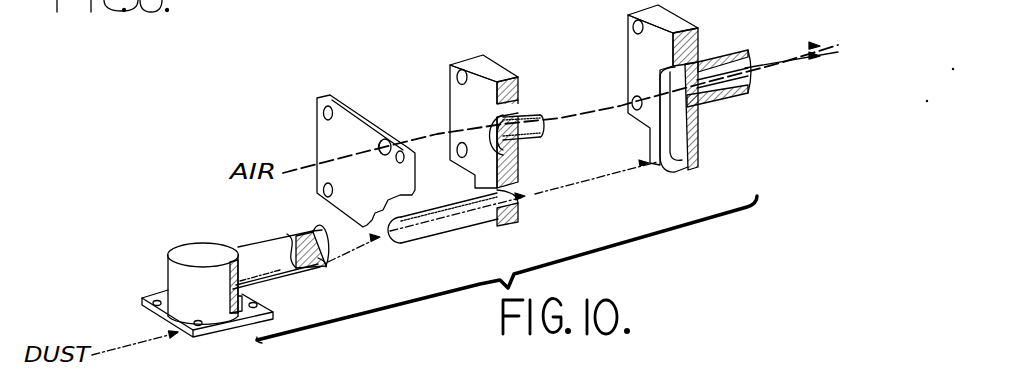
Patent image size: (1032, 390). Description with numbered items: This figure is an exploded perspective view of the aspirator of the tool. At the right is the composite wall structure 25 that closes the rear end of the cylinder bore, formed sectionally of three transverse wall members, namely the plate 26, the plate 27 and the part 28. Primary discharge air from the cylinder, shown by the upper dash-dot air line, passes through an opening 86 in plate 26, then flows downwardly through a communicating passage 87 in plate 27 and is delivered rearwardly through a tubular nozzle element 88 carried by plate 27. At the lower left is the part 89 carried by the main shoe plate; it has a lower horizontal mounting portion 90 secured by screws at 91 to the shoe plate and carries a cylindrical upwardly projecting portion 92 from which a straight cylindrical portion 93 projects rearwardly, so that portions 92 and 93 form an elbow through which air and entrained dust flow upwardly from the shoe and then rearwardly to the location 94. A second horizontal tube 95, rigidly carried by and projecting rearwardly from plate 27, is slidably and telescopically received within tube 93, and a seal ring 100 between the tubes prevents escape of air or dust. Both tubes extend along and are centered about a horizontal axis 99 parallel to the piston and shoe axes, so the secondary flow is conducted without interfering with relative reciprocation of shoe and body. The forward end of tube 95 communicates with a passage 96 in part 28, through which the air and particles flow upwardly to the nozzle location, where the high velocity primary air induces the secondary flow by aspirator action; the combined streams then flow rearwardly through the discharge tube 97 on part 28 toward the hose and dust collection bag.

The wall structure 25 is at (318, 78).
The plate 26 is at (332, 98).
The plate 27 is at (492, 68).
The part 28 is at (678, 27).
The opening 86 is at (386, 140).
The passage 87 is at (513, 113).
The tubular nozzle element 88 is at (527, 142).
The part 89 is at (175, 240).
The lower horizontal mounting portion 90 is at (234, 321).
The screws 91 is at (263, 298).
The cylindrical upwardly projecting portion 92 is at (208, 253).
The straight cylindrical portion 93 is at (260, 258).
The location 94 is at (331, 246).
The second horizontal tube 95 is at (447, 233).
The passage 96 is at (668, 168).
The discharge tube 97 is at (748, 83).
The axis 99 is at (363, 245).
The seal ring 100 is at (341, 262).